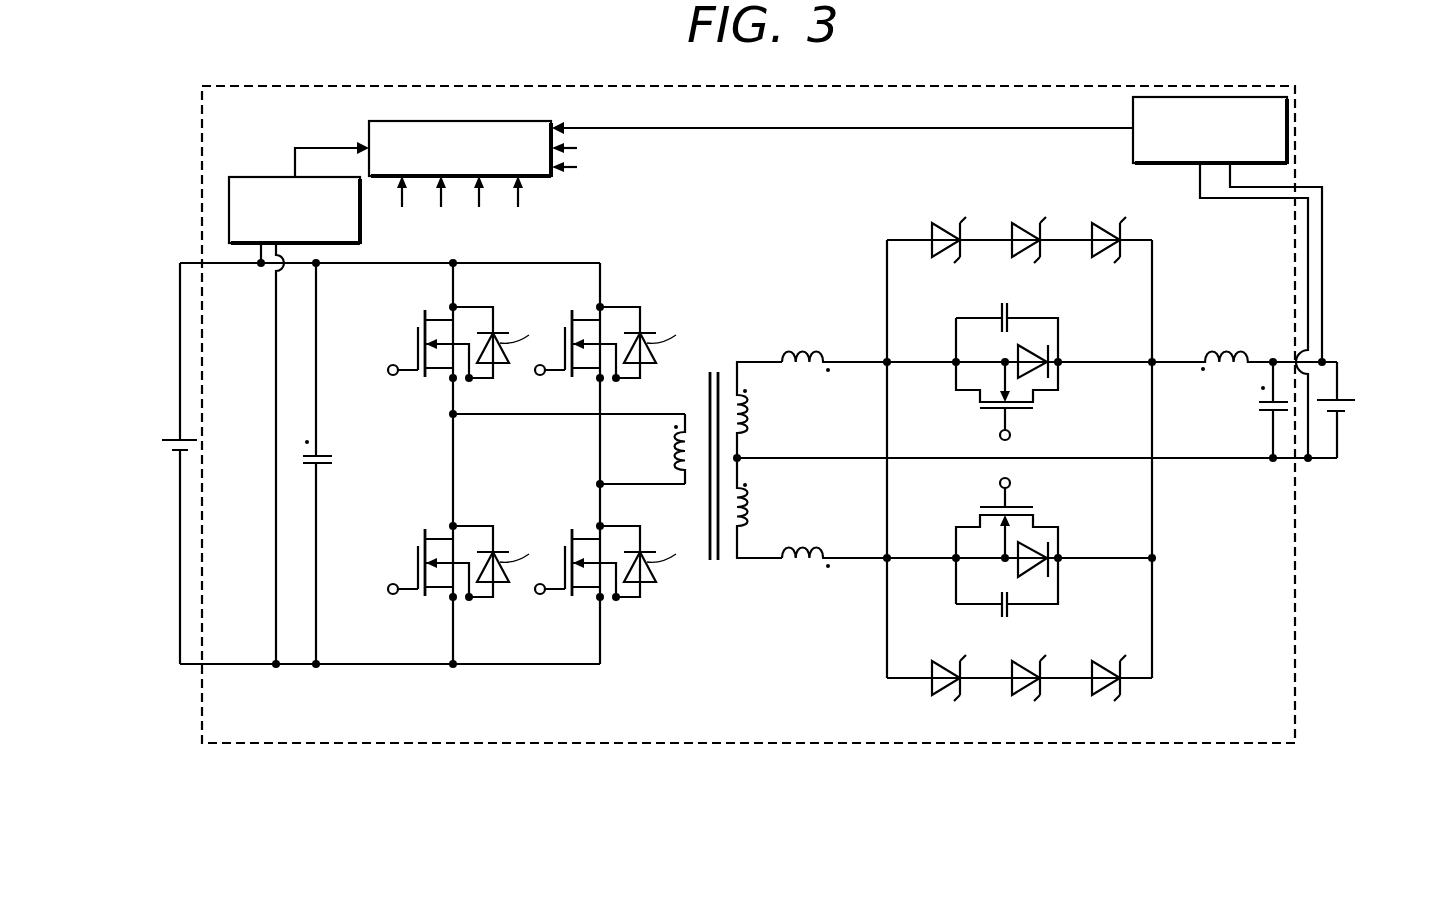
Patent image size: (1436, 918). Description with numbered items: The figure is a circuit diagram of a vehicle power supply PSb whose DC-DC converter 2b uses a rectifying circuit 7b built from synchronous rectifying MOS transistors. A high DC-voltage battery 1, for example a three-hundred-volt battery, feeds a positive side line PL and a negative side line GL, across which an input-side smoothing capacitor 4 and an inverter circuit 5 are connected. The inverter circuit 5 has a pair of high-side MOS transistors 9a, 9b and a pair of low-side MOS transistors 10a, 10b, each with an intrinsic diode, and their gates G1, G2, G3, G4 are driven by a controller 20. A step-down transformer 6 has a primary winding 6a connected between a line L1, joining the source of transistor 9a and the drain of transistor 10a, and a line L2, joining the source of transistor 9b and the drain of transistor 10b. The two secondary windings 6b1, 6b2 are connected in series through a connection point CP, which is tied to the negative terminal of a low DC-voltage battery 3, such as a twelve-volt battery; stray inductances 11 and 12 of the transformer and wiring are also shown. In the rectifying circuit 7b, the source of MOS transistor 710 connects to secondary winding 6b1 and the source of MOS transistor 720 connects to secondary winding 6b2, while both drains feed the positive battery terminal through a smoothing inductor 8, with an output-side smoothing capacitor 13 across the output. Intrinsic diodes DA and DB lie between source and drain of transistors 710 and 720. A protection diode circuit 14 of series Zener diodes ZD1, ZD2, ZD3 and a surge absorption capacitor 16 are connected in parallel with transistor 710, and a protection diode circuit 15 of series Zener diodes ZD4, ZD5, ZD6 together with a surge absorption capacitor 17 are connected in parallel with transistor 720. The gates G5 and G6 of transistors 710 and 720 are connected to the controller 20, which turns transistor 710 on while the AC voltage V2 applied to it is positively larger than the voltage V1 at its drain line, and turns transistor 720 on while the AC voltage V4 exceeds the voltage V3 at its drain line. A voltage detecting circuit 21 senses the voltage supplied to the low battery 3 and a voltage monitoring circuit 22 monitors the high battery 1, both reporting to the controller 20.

The high DC-voltage battery 1 is at (197, 451).
The low DC-voltage battery 3 is at (1350, 409).
The input-side smoothing capacitor 4 is at (333, 459).
The inverter circuit 5 is at (662, 247).
The step-down transformer 6 is at (716, 584).
The primary winding 6a is at (690, 428).
The secondary winding 6b1 is at (735, 392).
The secondary winding 6b2 is at (747, 508).
The rectifying circuit 7b is at (968, 730).
The smoothing inductor 8 is at (1232, 350).
The high-side MOS transistor 9a is at (466, 301).
The high-side MOS transistor 9b is at (618, 302).
The low-side MOS transistor 10a is at (468, 603).
The low-side MOS transistor 10b is at (612, 603).
The stray inductance 11 is at (814, 372).
The stray inductance 12 is at (811, 570).
The output-side smoothing capacitor 13 is at (1258, 403).
The protection diode circuit 14 is at (1017, 165).
The protection diode circuit 15 is at (1058, 720).
The surge absorption capacitor 16 is at (998, 310).
The surge absorption capacitor 17 is at (956, 604).
The controller 20 is at (368, 128).
The voltage detecting circuit 21 is at (1133, 112).
The voltage monitoring circuit 22 is at (258, 177).
The DC-DC converter 2b is at (713, 745).
The synchronous rectifying MOS transistor 710 is at (1060, 378).
The synchronous rectifying MOS transistor 720 is at (1062, 540).
The power supply PSb is at (428, 790).
The positive side line PL is at (553, 262).
The negative side line GL is at (412, 667).
The connection point CP is at (745, 462).
The line L1 is at (453, 458).
The line L2 is at (600, 458).
The intrinsic diode DA is at (1034, 346).
The intrinsic diode DB is at (1035, 540).
The voltage V1 is at (1097, 362).
The AC voltage V2 is at (923, 363).
The voltage V3 is at (1098, 560).
The AC voltage V4 is at (913, 557).
The Zener diode ZD1 is at (947, 225).
The Zener diode ZD2 is at (1026, 225).
The Zener diode ZD3 is at (1105, 225).
The Zener diode ZD4 is at (947, 665).
The Zener diode ZD5 is at (1026, 665).
The Zener diode ZD6 is at (1105, 665).
The gate G1 is at (403, 208).
The gate G2 is at (442, 208).
The gate G3 is at (480, 208).
The gate G4 is at (519, 208).
The gate G5 is at (583, 149).
The gate G6 is at (583, 169).